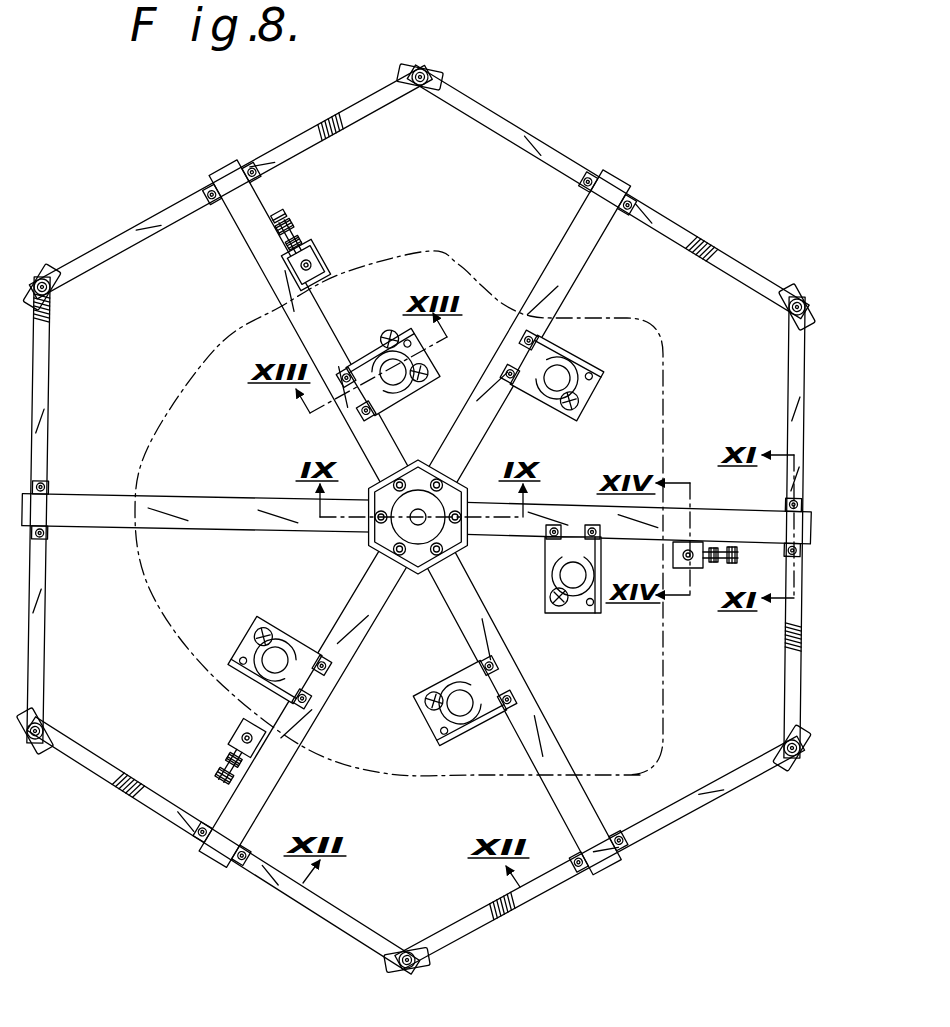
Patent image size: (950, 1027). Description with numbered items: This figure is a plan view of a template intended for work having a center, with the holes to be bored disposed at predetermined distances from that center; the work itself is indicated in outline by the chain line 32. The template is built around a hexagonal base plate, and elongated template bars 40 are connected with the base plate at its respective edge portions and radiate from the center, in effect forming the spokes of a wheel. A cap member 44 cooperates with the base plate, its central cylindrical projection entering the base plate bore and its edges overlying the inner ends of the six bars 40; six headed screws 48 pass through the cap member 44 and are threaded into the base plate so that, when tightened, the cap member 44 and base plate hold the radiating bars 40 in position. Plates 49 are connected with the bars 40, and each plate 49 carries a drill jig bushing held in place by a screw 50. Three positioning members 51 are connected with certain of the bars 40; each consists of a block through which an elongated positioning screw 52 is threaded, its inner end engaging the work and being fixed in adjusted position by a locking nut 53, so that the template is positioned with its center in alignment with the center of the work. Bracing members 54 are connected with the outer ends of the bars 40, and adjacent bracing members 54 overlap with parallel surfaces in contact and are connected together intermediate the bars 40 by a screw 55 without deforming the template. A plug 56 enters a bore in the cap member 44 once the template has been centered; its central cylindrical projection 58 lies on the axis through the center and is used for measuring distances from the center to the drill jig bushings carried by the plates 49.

The chain line 32 is at (183, 649).
The elongated template bars 40 is at (540, 712).
The cap member 44 is at (382, 535).
The headed screw 48 is at (400, 472).
The plates 49 is at (432, 724).
The screw 50 is at (406, 332).
The positioning members 51 is at (697, 565).
The positioning screw 52 is at (322, 282).
The locking nut 53 is at (295, 244).
The bracing members 54 is at (792, 717).
The screw 55 is at (413, 970).
The plug 56 is at (420, 535).
The central cylindrical projection 58 is at (443, 530).